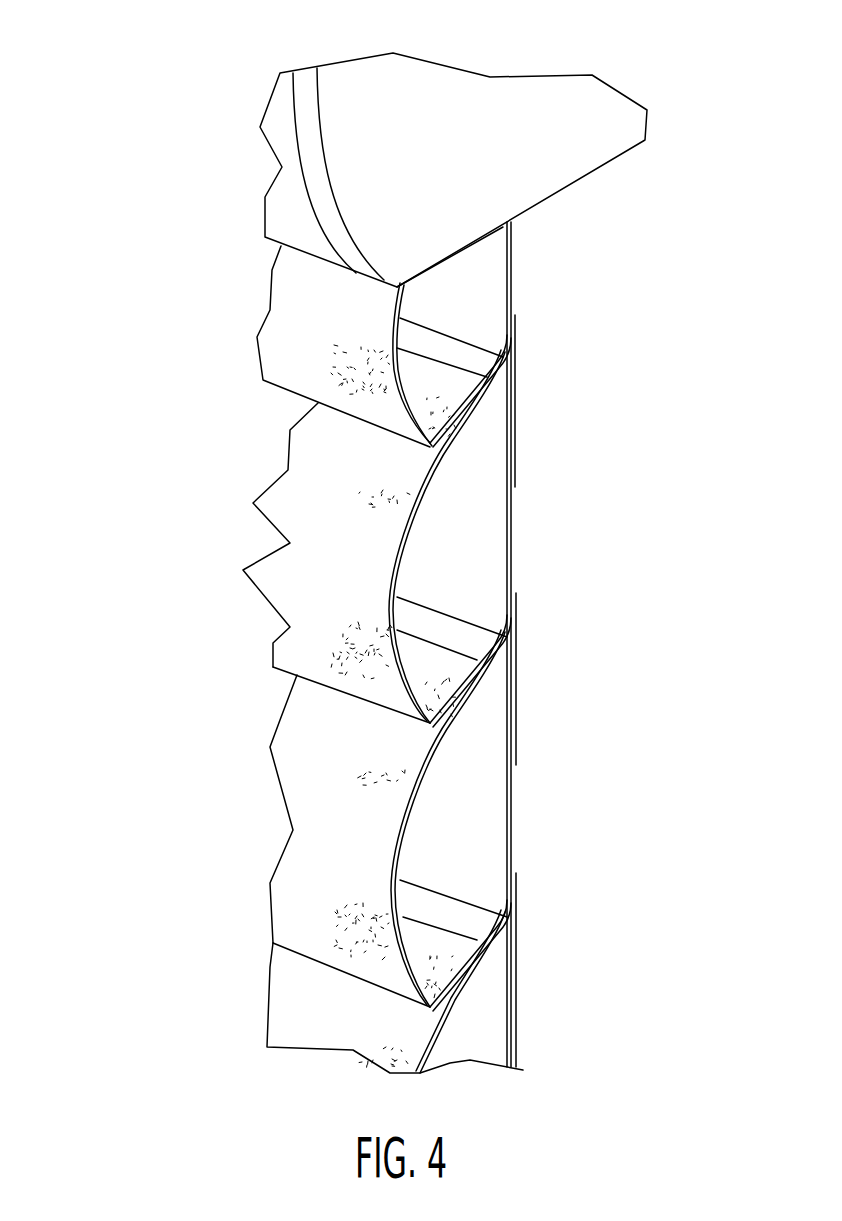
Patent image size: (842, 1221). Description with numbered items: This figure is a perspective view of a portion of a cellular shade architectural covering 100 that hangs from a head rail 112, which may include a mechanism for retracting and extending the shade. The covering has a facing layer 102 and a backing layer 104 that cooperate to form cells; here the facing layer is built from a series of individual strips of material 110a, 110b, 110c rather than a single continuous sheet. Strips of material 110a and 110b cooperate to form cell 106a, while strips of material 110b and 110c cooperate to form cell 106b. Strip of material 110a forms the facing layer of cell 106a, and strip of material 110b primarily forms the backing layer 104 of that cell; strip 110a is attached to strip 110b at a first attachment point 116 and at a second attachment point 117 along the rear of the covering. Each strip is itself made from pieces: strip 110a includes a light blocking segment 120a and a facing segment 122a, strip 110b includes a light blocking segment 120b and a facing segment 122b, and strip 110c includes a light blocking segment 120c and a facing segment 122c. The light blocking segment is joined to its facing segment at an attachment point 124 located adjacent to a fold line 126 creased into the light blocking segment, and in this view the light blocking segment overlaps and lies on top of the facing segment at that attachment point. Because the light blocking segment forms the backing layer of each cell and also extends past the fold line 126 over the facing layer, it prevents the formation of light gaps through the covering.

The architectural covering 100 is at (142, 117).
The facing layer 102 is at (215, 343).
The backing layer 104 is at (638, 440).
The cell 106a is at (513, 530).
The cell 106b is at (513, 840).
The strip of material 110a is at (513, 385).
The strip of material 110b is at (408, 681).
The strip of material 110c is at (518, 755).
The head rail 112 is at (583, 160).
The first attachment point 116 is at (513, 330).
The second attachment point 117 is at (520, 725).
The light blocking segment 120a is at (513, 265).
The light blocking segment 120b is at (513, 455).
The light blocking segment 120c is at (513, 863).
The facing segment 122a is at (250, 517).
The facing segment 122b is at (278, 855).
The facing segment 122c is at (258, 1038).
The attachment point 124 is at (505, 665).
The fold line 126 is at (518, 615).